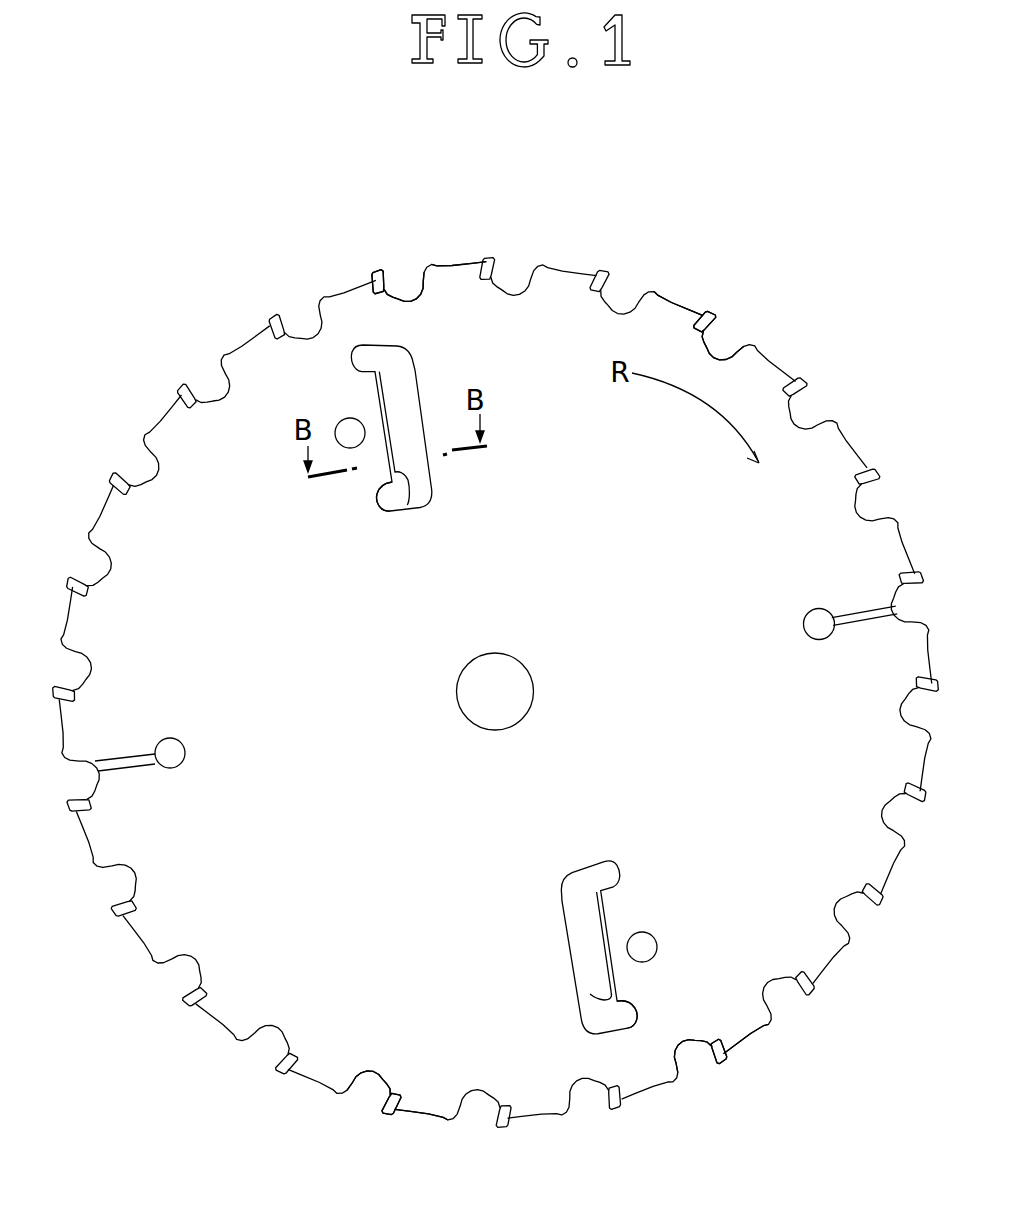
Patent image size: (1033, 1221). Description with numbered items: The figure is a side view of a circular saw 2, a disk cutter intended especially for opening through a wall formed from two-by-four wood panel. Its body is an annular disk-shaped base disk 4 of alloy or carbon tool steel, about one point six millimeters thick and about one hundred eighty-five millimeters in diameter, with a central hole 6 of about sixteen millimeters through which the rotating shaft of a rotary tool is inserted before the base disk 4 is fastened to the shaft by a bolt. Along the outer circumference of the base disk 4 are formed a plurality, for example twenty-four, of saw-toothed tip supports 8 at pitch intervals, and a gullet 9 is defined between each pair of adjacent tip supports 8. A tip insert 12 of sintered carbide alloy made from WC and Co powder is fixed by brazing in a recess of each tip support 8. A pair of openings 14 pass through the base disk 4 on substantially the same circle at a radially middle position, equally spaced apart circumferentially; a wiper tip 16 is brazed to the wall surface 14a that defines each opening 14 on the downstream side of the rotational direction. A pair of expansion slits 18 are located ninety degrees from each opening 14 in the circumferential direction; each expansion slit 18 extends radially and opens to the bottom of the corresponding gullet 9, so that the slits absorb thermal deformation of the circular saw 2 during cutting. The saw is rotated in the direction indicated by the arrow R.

The circular saw 2 is at (584, 229).
The base disk 4 is at (335, 708).
The central hole 6 is at (505, 662).
The tip support 8 is at (462, 266).
The gullet 9 is at (411, 300).
The tip insert 12 is at (379, 282).
The opening 14 is at (409, 366).
The wall surface 14a is at (403, 489).
The wiper tip 16 is at (395, 447).
The expansion slit 18 is at (120, 758).